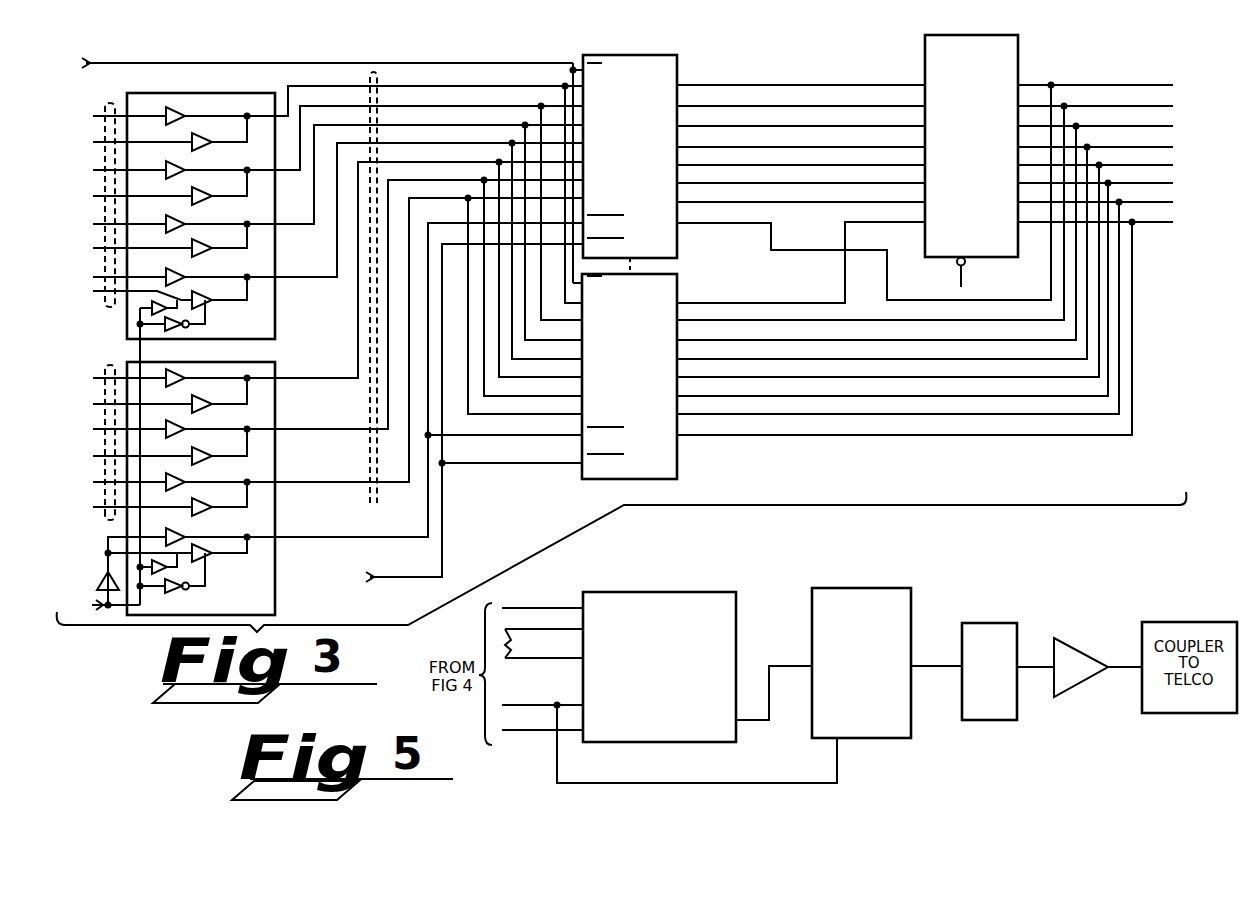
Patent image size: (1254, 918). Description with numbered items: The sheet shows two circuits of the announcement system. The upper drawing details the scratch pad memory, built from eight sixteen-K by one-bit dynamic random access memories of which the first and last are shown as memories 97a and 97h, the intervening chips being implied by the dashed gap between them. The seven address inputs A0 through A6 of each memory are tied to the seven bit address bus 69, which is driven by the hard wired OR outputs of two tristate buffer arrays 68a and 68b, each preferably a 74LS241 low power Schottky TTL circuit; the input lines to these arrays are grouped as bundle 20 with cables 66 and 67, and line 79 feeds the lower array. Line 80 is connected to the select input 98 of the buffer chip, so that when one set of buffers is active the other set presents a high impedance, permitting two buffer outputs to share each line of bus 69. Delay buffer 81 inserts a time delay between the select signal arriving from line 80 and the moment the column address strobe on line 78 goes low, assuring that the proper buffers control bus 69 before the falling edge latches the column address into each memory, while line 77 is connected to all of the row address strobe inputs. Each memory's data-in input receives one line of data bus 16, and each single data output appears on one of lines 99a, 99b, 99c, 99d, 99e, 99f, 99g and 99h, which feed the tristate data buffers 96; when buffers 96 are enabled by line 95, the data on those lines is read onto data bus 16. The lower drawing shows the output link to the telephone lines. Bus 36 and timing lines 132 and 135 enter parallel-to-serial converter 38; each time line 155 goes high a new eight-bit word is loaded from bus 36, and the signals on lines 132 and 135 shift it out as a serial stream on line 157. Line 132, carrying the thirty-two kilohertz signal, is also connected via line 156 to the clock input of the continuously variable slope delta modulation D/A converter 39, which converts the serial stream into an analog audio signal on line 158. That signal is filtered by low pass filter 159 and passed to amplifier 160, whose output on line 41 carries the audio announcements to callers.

In FIG. 3, the data bus 16 is at (1176, 77).
In FIG. 3, the data input lines 20 is at (83, 107).
In FIG. 3, the cable 66 is at (114, 102).
In FIG. 3, the cable 67 is at (112, 362).
In FIG. 3, the tristate buffer array 68a is at (200, 93).
In FIG. 3, the tristate buffer array 68b is at (275, 362).
In FIG. 3, the seven bit address bus 69 is at (371, 503).
In FIG. 3, the row address strobe line 77 is at (414, 577).
In FIG. 3, the column address strobe line 78 is at (330, 537).
In FIG. 3, the line 79 is at (108, 538).
In FIG. 3, the select line 80 is at (92, 605).
In FIG. 3, the delay buffer 81 is at (98, 583).
In FIG. 3, the enable line 95 is at (964, 275).
In FIG. 3, the tristate buffers 96 is at (1018, 50).
In FIG. 3, the dynamic random access memory 97a is at (677, 242).
In FIG. 3, the dynamic random access memory 97h is at (677, 287).
In FIG. 3, the select input 98 is at (143, 597).
In FIG. 3, the data output line 99a is at (758, 85).
In FIG. 3, the data output line 99b is at (766, 106).
In FIG. 3, the data output line 99c is at (766, 126).
In FIG. 3, the data output line 99d is at (766, 147).
In FIG. 3, the data output line 99e is at (766, 165).
In FIG. 3, the data output line 99f is at (778, 183).
In FIG. 3, the data output line 99g is at (778, 202).
In FIG. 3, the data output line 99h is at (790, 250).
In FIG. 5, the bus 36 is at (552, 663).
In FIG. 5, the parallel-to-serial converter 38 is at (704, 592).
In FIG. 5, the CVSD D/A converter 39 is at (832, 588).
In FIG. 5, the output line 41 is at (1125, 668).
In FIG. 5, the 32-kilohertz line 132 is at (552, 702).
In FIG. 5, the timing line 135 is at (533, 732).
In FIG. 5, the load line 155 is at (561, 608).
In FIG. 5, the clock line 156 is at (786, 783).
In FIG. 5, the serial output line 157 is at (782, 665).
In FIG. 5, the analog output line 158 is at (935, 665).
In FIG. 5, the low pass filter 159 is at (988, 622).
In FIG. 5, the amplifier 160 is at (1075, 642).